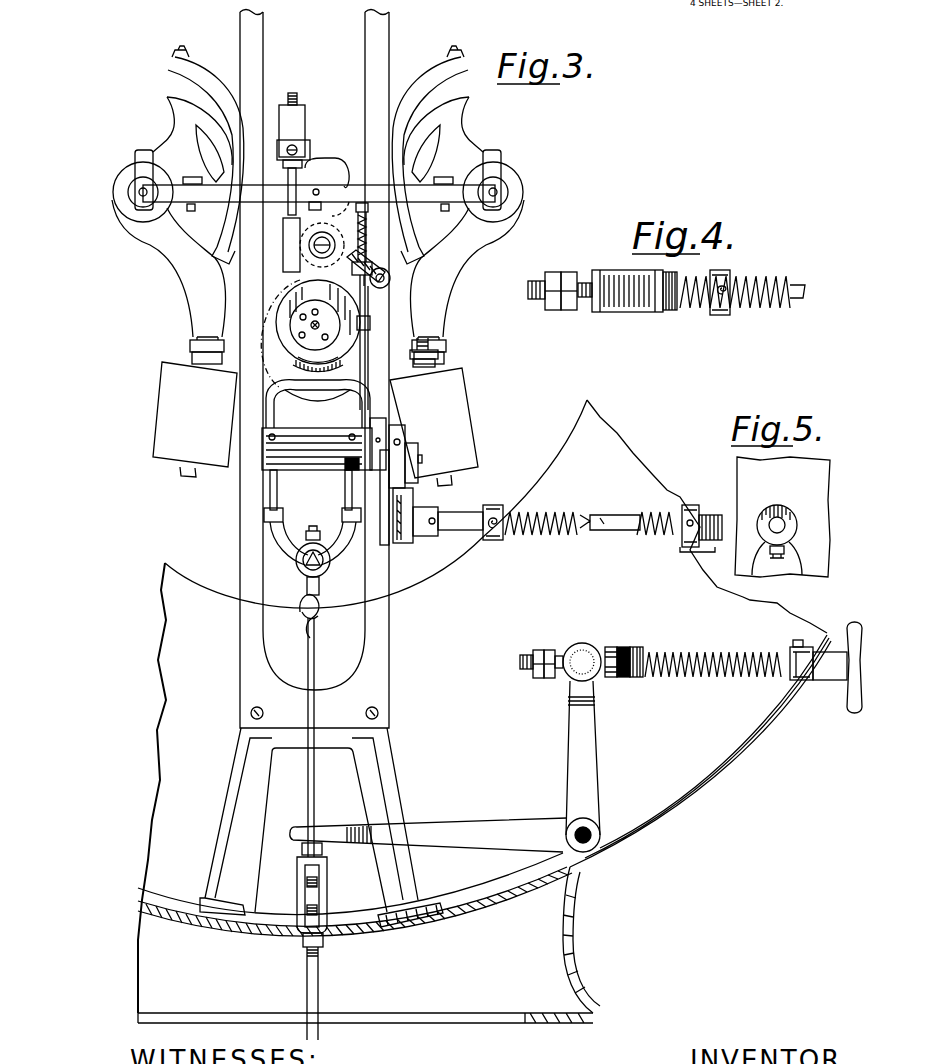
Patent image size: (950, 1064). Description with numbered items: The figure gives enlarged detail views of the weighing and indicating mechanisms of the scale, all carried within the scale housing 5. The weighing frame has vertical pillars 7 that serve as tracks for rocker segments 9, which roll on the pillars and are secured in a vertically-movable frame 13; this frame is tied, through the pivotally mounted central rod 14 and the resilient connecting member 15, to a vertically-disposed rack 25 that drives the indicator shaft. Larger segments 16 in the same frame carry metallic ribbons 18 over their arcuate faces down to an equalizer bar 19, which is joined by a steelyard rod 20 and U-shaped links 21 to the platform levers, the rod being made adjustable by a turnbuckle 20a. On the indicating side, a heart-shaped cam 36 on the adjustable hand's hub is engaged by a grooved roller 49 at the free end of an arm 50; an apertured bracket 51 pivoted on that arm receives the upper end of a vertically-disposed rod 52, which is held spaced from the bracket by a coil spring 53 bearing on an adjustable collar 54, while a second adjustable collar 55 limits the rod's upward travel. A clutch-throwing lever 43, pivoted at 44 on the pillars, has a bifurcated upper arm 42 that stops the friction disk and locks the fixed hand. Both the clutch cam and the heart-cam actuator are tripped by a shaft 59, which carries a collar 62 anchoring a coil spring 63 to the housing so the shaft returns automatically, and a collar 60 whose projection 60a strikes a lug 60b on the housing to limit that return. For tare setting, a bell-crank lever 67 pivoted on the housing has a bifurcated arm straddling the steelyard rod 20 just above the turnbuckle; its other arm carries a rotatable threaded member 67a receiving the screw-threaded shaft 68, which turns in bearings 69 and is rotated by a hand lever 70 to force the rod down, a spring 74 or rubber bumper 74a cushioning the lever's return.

In FIG. 3, the vertical pillars 7 is at (370, 60).
In FIG. 3, the larger segments 16 is at (200, 88).
In FIG. 3, the rocker segments 9 is at (185, 120).
In FIG. 3, the vertically-movable frame 13 is at (467, 198).
In FIG. 3, the resilient connecting member 15 is at (320, 160).
In FIG. 3, the central rod 14 is at (317, 189).
In FIG. 3, the rack 25 is at (290, 253).
In FIG. 3, the grooved roller 49 is at (323, 235).
In FIG. 3, the arm 50 is at (334, 238).
In FIG. 3, the adjustable collar 54 is at (366, 212).
In FIG. 3, the coil spring 53 is at (364, 231).
In FIG. 3, the apertured bracket 51 is at (365, 247).
In FIG. 3, the adjustable collar 55 is at (388, 290).
In FIG. 3, the heart-shaped cam 36 is at (352, 303).
In FIG. 3, the vertically-disposed rod 52 is at (368, 323).
In FIG. 3, the bifurcated upper arm 42 is at (353, 370).
In FIG. 3, the clutch-throwing lever 43 is at (353, 410).
In FIG. 3, the pivot 44 is at (308, 436).
In FIG. 3, the metallic ribbons 18 is at (350, 492).
In FIG. 3, the equalizer bar 19 is at (337, 531).
In FIG. 3, the U-shaped links 21 is at (315, 584).
In FIG. 3, the steelyard rod 20 is at (316, 798).
In FIG. 3, the turnbuckle 20a is at (320, 861).
In FIG. 3, the shaft 59 is at (457, 518).
In FIG. 3, the collar 62 is at (497, 508).
In FIG. 3, the coil spring 63 is at (525, 518).
In FIG. 3, the collar 60 is at (688, 506).
In FIG. 3, the projection 60a is at (705, 509).
In FIG. 5, the lug 60b is at (793, 537).
In FIG. 5, the scale housing 5 is at (815, 485).
In FIG. 3, the bell-crank lever 67 is at (483, 825).
In FIG. 3, the rotatable member 67a is at (584, 655).
In FIG. 4, the rotatable member 67a is at (633, 300).
In FIG. 4, the spring 74 is at (683, 310).
In FIG. 3, the rubber bumper 74a is at (622, 650).
In FIG. 3, the shaft 68 is at (678, 653).
In FIG. 4, the shaft 68 is at (582, 287).
In FIG. 3, the bearings 69 is at (797, 665).
In FIG. 3, the hand lever 70 is at (850, 697).